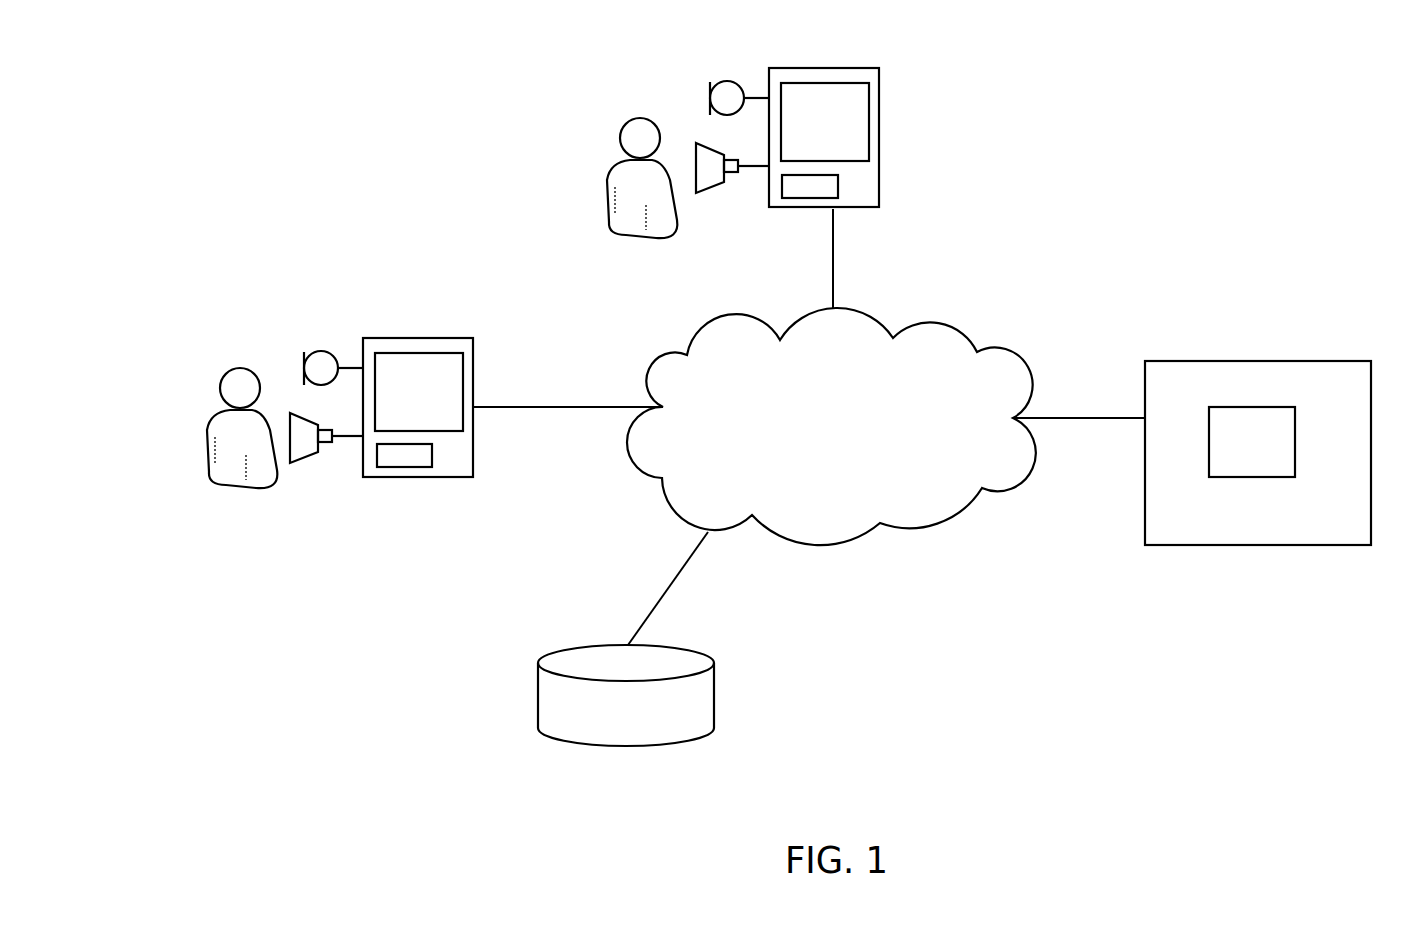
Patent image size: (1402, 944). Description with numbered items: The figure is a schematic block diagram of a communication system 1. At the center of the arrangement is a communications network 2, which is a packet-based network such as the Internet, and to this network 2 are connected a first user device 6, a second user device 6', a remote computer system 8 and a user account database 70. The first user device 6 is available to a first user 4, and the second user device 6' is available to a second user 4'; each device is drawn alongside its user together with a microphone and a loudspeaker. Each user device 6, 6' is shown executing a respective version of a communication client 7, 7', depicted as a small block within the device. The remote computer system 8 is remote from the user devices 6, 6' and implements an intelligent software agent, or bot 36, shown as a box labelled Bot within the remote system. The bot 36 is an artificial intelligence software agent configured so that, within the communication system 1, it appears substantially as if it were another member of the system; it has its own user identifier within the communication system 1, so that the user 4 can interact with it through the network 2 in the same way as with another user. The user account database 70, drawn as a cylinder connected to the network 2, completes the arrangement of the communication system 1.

The communication system 1 is at (178, 180).
The communications network 2 is at (842, 543).
The first user 4 is at (242, 408).
The second user 4' is at (642, 156).
The first user device 6 is at (381, 448).
The second user device 6' is at (787, 180).
The communication client 7 is at (404, 493).
The communication client 7' is at (810, 224).
The remote computer system 8 is at (1258, 445).
The intelligent software agent (bot) 36 is at (1209, 457).
The user account database 70 is at (714, 723).